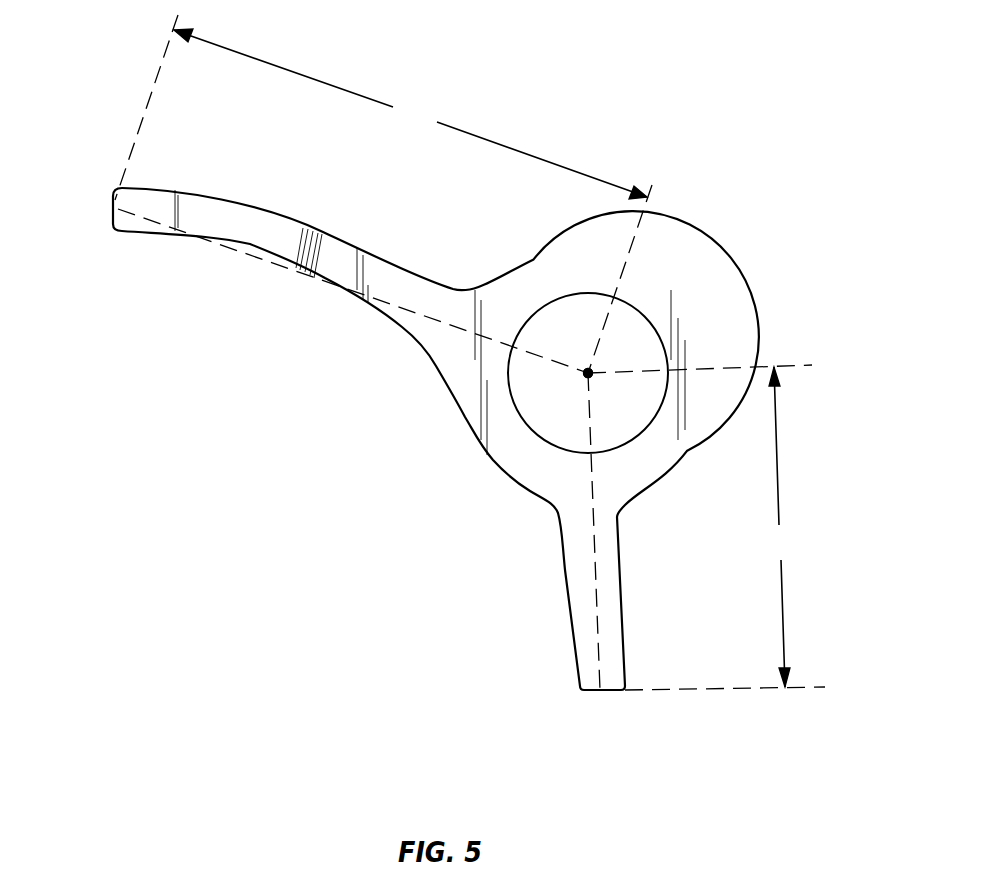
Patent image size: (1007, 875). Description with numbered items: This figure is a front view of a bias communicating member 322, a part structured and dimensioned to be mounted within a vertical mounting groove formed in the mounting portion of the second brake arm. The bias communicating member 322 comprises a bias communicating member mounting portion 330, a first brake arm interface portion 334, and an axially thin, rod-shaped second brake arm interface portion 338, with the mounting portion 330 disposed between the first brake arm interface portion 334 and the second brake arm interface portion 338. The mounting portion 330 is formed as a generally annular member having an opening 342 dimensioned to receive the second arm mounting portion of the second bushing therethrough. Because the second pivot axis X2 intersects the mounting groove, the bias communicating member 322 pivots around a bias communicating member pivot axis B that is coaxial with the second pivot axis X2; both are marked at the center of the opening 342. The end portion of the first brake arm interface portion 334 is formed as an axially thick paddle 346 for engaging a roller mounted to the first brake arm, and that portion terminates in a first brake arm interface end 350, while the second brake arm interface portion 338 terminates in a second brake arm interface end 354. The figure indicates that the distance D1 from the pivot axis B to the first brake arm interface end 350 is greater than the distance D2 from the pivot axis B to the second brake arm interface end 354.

The bias communicating member 322 is at (431, 377).
The bias communicating member mounting portion 330 is at (665, 300).
The first brake arm interface portion 334 is at (352, 243).
The second brake arm interface portion 338 is at (581, 597).
The opening 342 is at (564, 326).
The paddle 346 is at (155, 237).
The first brake arm interface end 350 is at (108, 203).
The second brake arm interface end 354 is at (599, 690).
The bias communicating member pivot axis B is at (588, 373).
The second pivot axis X2 is at (588, 373).
The distance from pivot axis B to first brake arm interface end D1 is at (410, 114).
The distance from pivot axis B to second brake arm interface end D2 is at (781, 527).